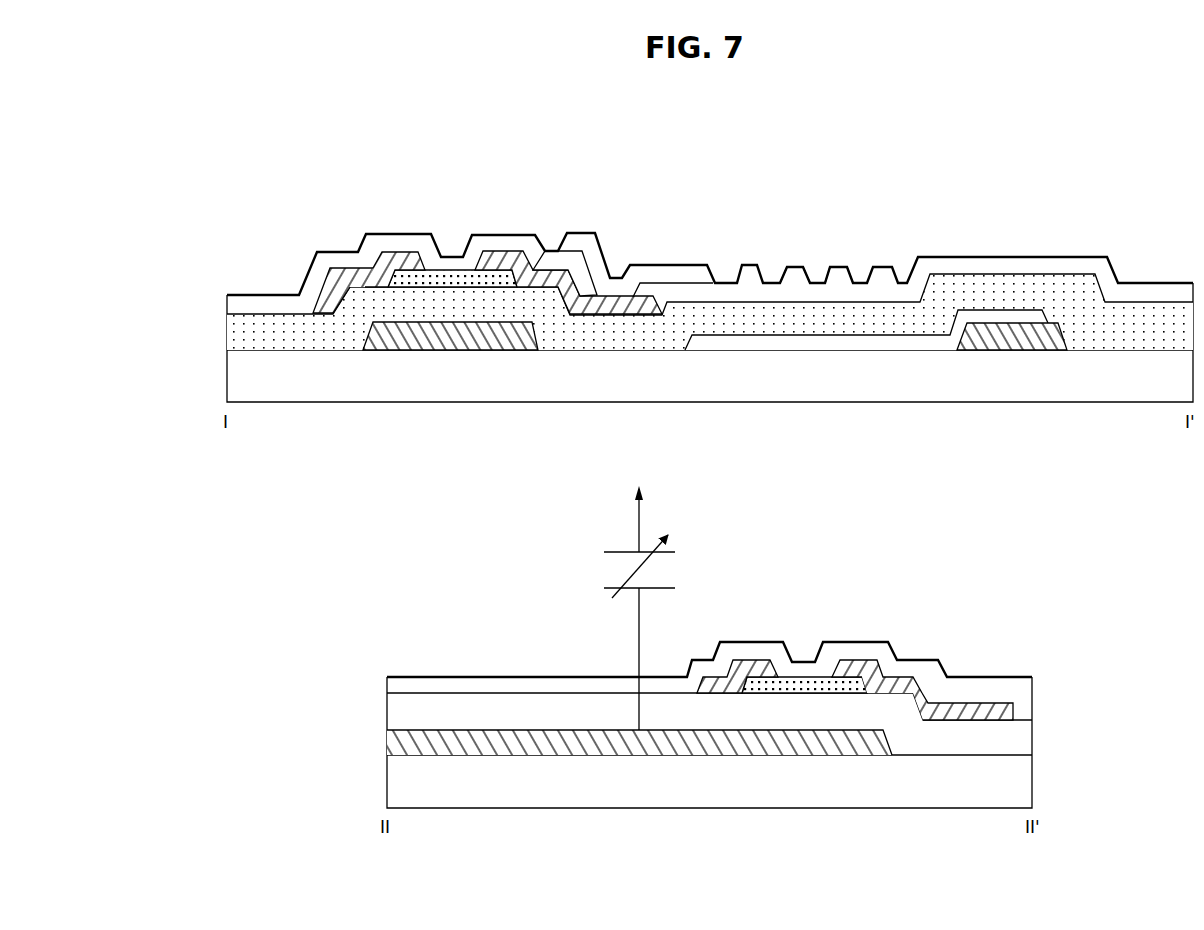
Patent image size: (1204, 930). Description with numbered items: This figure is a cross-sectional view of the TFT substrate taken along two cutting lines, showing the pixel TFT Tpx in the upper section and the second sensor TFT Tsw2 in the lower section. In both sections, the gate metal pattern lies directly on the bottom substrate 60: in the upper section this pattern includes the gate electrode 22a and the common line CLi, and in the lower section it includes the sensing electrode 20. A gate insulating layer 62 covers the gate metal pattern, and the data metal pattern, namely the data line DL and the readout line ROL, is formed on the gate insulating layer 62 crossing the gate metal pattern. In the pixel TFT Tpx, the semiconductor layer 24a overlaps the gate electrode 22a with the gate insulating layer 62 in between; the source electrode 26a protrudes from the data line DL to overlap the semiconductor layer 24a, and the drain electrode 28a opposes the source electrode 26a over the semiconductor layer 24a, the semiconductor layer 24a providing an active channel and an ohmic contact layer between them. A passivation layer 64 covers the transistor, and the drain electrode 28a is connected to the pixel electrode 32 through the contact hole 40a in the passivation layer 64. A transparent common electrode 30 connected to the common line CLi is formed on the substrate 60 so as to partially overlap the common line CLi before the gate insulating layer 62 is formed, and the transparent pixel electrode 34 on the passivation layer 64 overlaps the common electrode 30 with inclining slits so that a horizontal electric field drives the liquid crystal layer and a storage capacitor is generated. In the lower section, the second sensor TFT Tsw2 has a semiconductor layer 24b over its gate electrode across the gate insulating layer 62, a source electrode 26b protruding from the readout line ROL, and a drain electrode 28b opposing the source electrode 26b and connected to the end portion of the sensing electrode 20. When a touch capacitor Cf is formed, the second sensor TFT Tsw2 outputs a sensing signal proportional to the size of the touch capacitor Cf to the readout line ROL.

The bottom substrate 60 is at (238, 380).
The gate insulating layer 62 is at (238, 332).
The passivation layer 64 is at (238, 304).
The gate electrode 22a is at (449, 350).
The semiconductor layer 24a is at (447, 278).
The source electrode 26a is at (388, 258).
The drain electrode 28a is at (550, 275).
The contact hole 40a is at (615, 272).
The data line DL is at (348, 278).
The pixel TFT Tpx is at (521, 195).
The pixel electrode 32 is at (668, 272).
The transparent pixel electrode 34 is at (773, 268).
The transparent common electrode 30 is at (838, 340).
The common line CLi is at (1018, 342).
The sensing electrode 20 is at (668, 755).
The semiconductor layer 24b is at (802, 683).
The source electrode 26b is at (870, 668).
The drain electrode 28b is at (747, 668).
The readout line ROL is at (985, 710).
The second sensor TFT Tsw2 is at (861, 603).
The touch capacitor Cf is at (655, 608).